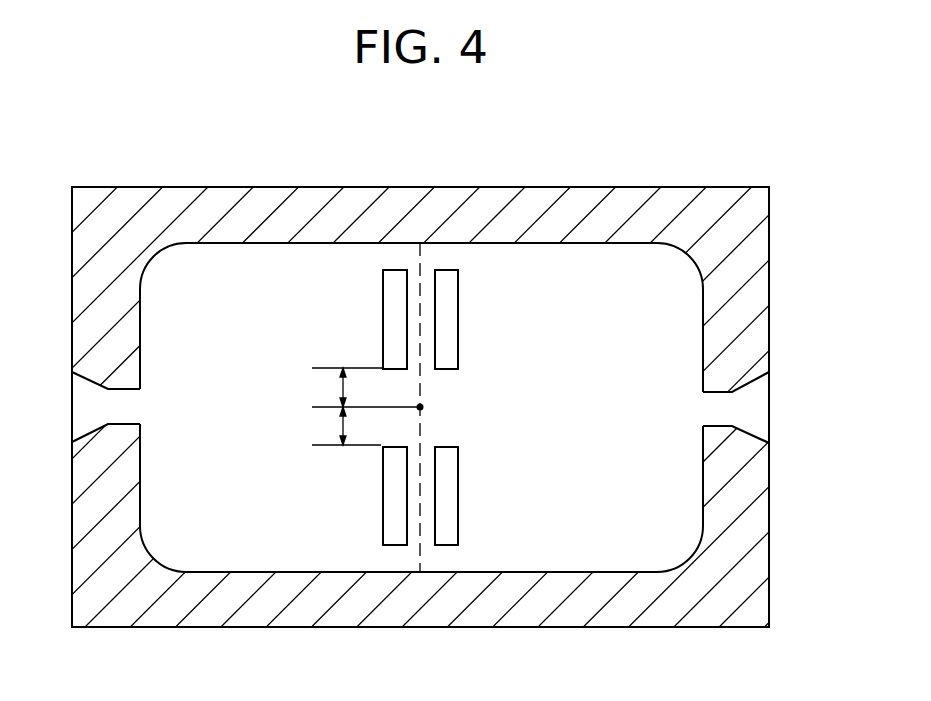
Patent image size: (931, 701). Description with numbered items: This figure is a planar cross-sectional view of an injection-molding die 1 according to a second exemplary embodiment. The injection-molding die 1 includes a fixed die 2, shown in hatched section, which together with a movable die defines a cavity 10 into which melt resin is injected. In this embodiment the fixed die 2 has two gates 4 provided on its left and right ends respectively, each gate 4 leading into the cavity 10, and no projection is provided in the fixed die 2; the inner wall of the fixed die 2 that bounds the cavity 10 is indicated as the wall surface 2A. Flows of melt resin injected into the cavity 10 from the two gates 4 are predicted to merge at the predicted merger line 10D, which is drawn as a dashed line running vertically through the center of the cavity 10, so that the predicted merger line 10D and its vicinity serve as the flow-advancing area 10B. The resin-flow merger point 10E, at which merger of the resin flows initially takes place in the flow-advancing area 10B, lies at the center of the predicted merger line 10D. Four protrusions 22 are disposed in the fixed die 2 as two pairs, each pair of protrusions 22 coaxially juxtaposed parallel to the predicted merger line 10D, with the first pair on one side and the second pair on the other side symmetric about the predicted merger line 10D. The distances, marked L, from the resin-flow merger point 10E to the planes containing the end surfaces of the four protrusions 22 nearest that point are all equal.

The injection-molding die 1 is at (490, 148).
The fixed die 2 is at (738, 223).
The inner wall surface of housing 2A is at (667, 325).
The gate 4 is at (93, 408).
The cavity 10 is at (667, 288).
The flow-advancing area 10B is at (428, 458).
The predicted merger line 10D is at (420, 396).
The resin-flow merger point 10E is at (420, 407).
The protrusion 22 is at (445, 287).